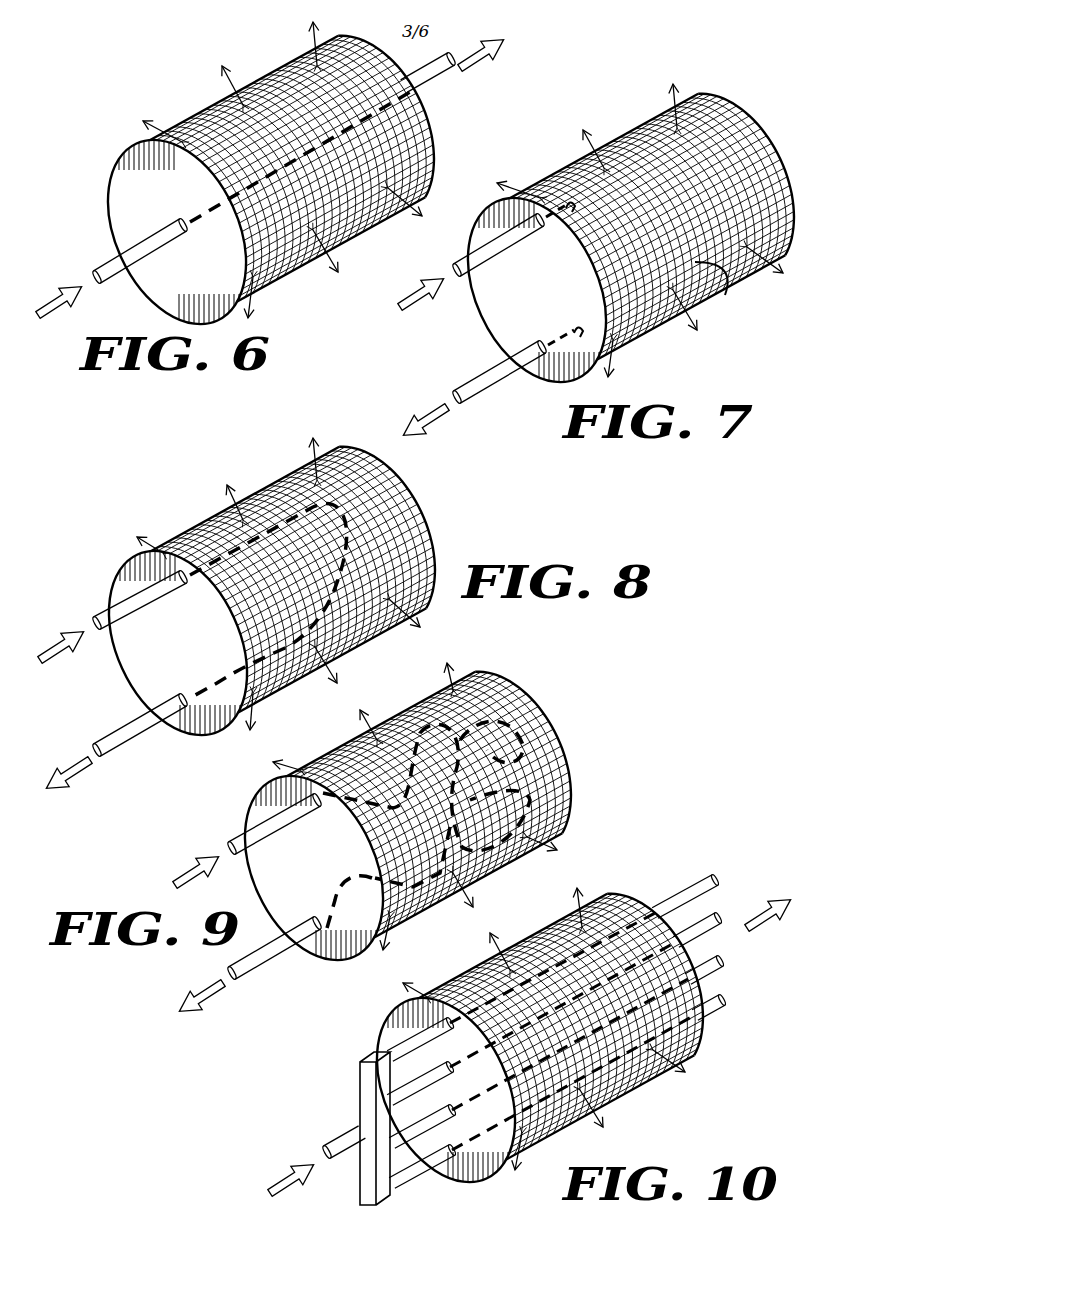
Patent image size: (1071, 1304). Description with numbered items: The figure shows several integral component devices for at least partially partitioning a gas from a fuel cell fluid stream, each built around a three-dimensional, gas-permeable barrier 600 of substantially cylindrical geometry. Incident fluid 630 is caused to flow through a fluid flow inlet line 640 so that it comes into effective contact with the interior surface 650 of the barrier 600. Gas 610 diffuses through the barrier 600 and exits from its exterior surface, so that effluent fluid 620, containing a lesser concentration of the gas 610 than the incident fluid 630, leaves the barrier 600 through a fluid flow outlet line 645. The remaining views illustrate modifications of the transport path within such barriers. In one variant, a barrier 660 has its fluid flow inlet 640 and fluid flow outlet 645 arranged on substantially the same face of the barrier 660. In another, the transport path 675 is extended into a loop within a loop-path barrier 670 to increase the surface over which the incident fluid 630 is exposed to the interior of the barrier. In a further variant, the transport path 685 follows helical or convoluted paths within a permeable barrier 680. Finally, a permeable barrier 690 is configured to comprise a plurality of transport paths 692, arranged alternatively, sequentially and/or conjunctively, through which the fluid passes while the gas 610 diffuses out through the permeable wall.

In FIG. 6, the gas-permeable barrier 600 is at (110, 176).
In FIG. 7, the gas-permeable barrier 600 is at (617, 249).
In FIG. 8, the gas-permeable barrier 600 is at (258, 602).
In FIG. 9, the gas-permeable barrier 600 is at (394, 827).
In FIG. 10, the gas-permeable barrier 600 is at (373, 1033).
In FIG. 6, the gas 610 is at (148, 133).
In FIG. 7, the gas 610 is at (588, 127).
In FIG. 8, the gas 610 is at (137, 543).
In FIG. 9, the gas 610 is at (559, 844).
In FIG. 10, the gas 610 is at (403, 991).
In FIG. 6, the effluent fluid 620 is at (482, 58).
In FIG. 7, the effluent fluid 620 is at (417, 408).
In FIG. 8, the effluent fluid 620 is at (73, 776).
In FIG. 9, the effluent fluid 620 is at (208, 1002).
In FIG. 10, the effluent fluid 620 is at (757, 931).
In FIG. 6, the incident fluid 630 is at (60, 294).
In FIG. 7, the incident fluid 630 is at (410, 290).
In FIG. 8, the incident fluid 630 is at (50, 640).
In FIG. 9, the incident fluid 630 is at (183, 867).
In FIG. 10, the incident fluid 630 is at (280, 1171).
In FIG. 6, the fluid flow inlet line 640 is at (100, 263).
In FIG. 7, the fluid flow inlet line 640 is at (507, 258).
In FIG. 8, the fluid flow inlet line 640 is at (92, 611).
In FIG. 9, the fluid flow inlet line 640 is at (227, 834).
In FIG. 6, the fluid flow outlet line 645 is at (430, 88).
In FIG. 7, the fluid flow outlet line 645 is at (507, 386).
In FIG. 8, the fluid flow outlet line 645 is at (147, 738).
In FIG. 9, the fluid flow outlet line 645 is at (282, 962).
In FIG. 6, the interior surface 650 is at (428, 122).
In FIG. 7, the barrier 660 is at (731, 291).
In FIG. 8, the loop-path barrier 670 is at (183, 528).
In FIG. 8, the transport path 675 is at (215, 677).
In FIG. 9, the permeable barrier 680 is at (325, 739).
In FIG. 9, the transport path 685 is at (342, 873).
In FIG. 10, the permeable barrier 690 is at (452, 977).
In FIG. 10, the transport paths 692 is at (623, 894).